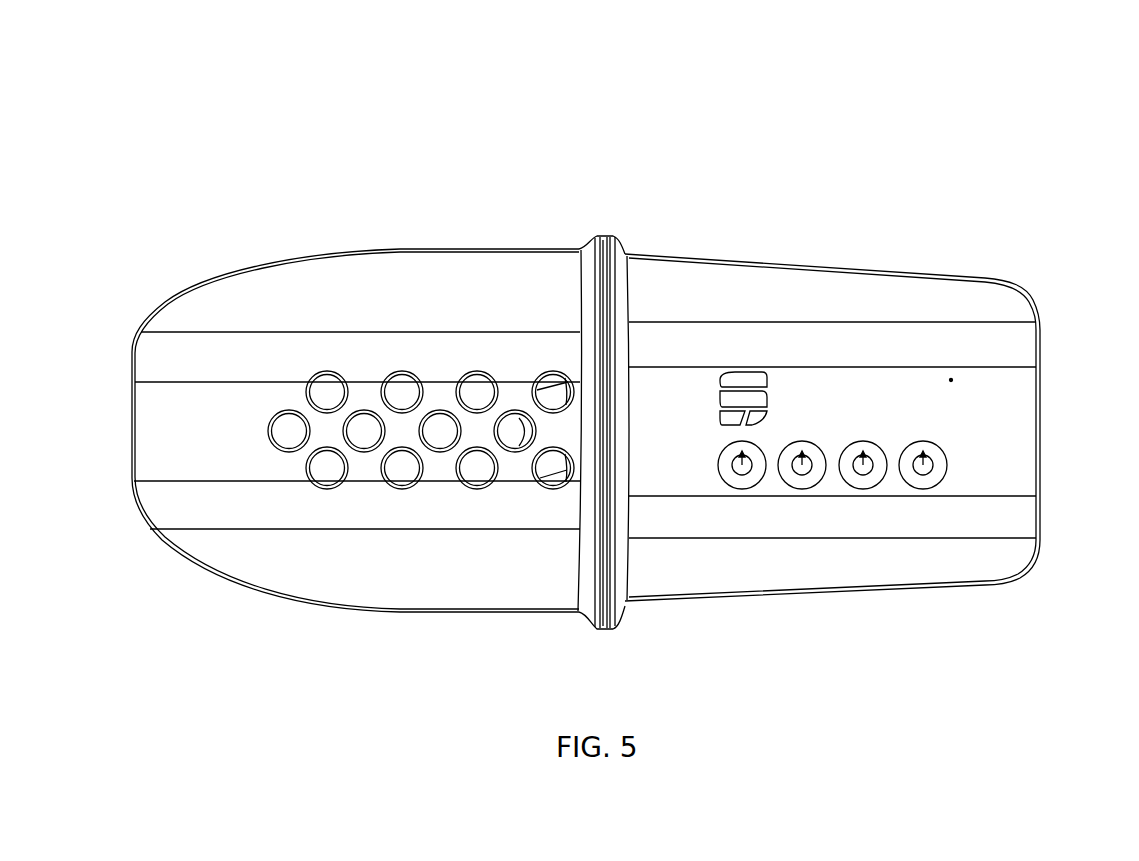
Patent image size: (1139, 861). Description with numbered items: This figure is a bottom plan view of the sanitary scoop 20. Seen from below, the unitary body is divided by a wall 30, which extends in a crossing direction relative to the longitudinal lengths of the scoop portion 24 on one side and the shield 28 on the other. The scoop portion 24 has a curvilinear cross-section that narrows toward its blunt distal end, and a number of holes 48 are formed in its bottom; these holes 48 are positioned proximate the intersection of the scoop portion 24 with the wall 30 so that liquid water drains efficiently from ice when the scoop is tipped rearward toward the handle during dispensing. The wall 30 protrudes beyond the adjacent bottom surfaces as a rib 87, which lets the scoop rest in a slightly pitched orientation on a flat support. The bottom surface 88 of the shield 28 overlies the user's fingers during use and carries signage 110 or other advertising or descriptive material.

The scoop 20 is at (662, 115).
The scoop portion 24 is at (384, 276).
The shield 28 is at (838, 297).
The wall 30 is at (606, 240).
The holes 48 is at (318, 373).
The rib 87 is at (614, 520).
The bottom surface 88 is at (946, 357).
The signage 110 is at (960, 396).